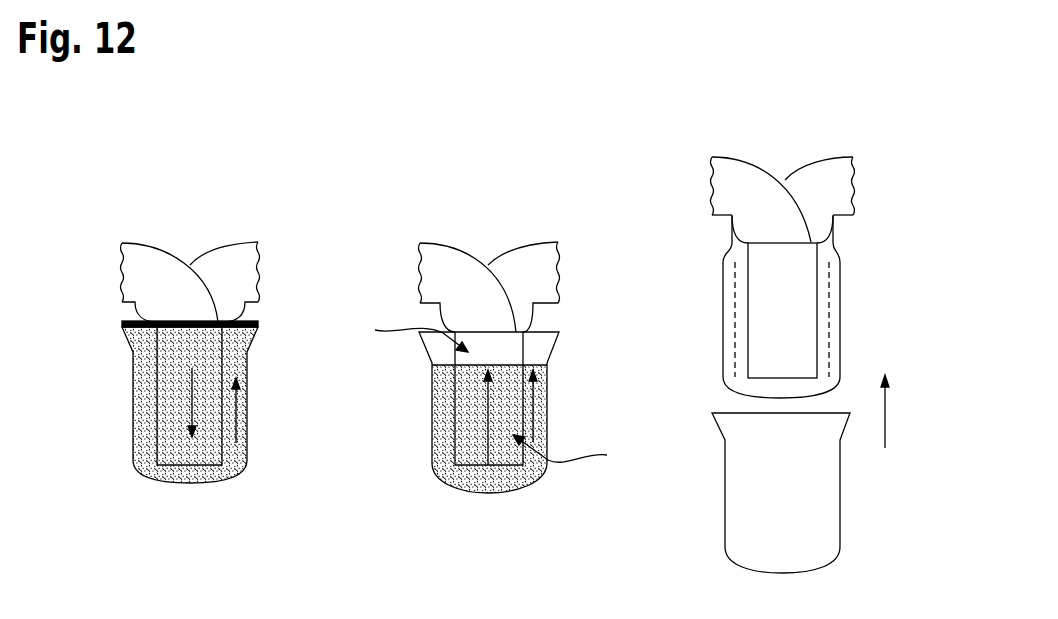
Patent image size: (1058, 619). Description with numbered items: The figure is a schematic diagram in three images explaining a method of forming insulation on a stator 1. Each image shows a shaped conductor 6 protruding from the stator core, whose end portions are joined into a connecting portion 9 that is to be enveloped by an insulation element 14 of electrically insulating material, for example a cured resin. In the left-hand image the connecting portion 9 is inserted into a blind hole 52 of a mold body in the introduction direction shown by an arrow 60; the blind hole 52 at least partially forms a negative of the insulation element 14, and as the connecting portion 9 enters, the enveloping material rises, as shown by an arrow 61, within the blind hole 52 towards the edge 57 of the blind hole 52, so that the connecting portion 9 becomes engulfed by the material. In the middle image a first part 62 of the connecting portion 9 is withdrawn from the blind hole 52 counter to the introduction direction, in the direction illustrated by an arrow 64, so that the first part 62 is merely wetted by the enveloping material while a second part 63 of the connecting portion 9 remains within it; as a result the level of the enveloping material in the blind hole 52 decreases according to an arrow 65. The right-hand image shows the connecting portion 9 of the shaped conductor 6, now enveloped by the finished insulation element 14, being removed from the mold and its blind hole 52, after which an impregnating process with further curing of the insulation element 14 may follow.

The stator 1 is at (826, 232).
The shaped conductor 6 is at (158, 275).
The connecting portion 9 is at (163, 438).
The insulation element 14 is at (840, 315).
The blind hole 52 is at (248, 433).
The edge 57 is at (243, 320).
The arrow 60 is at (188, 395).
The arrow 61 is at (247, 398).
The first part 62 is at (406, 332).
The second part 63 is at (534, 429).
The arrow 64 is at (488, 410).
The arrow 65 is at (533, 415).